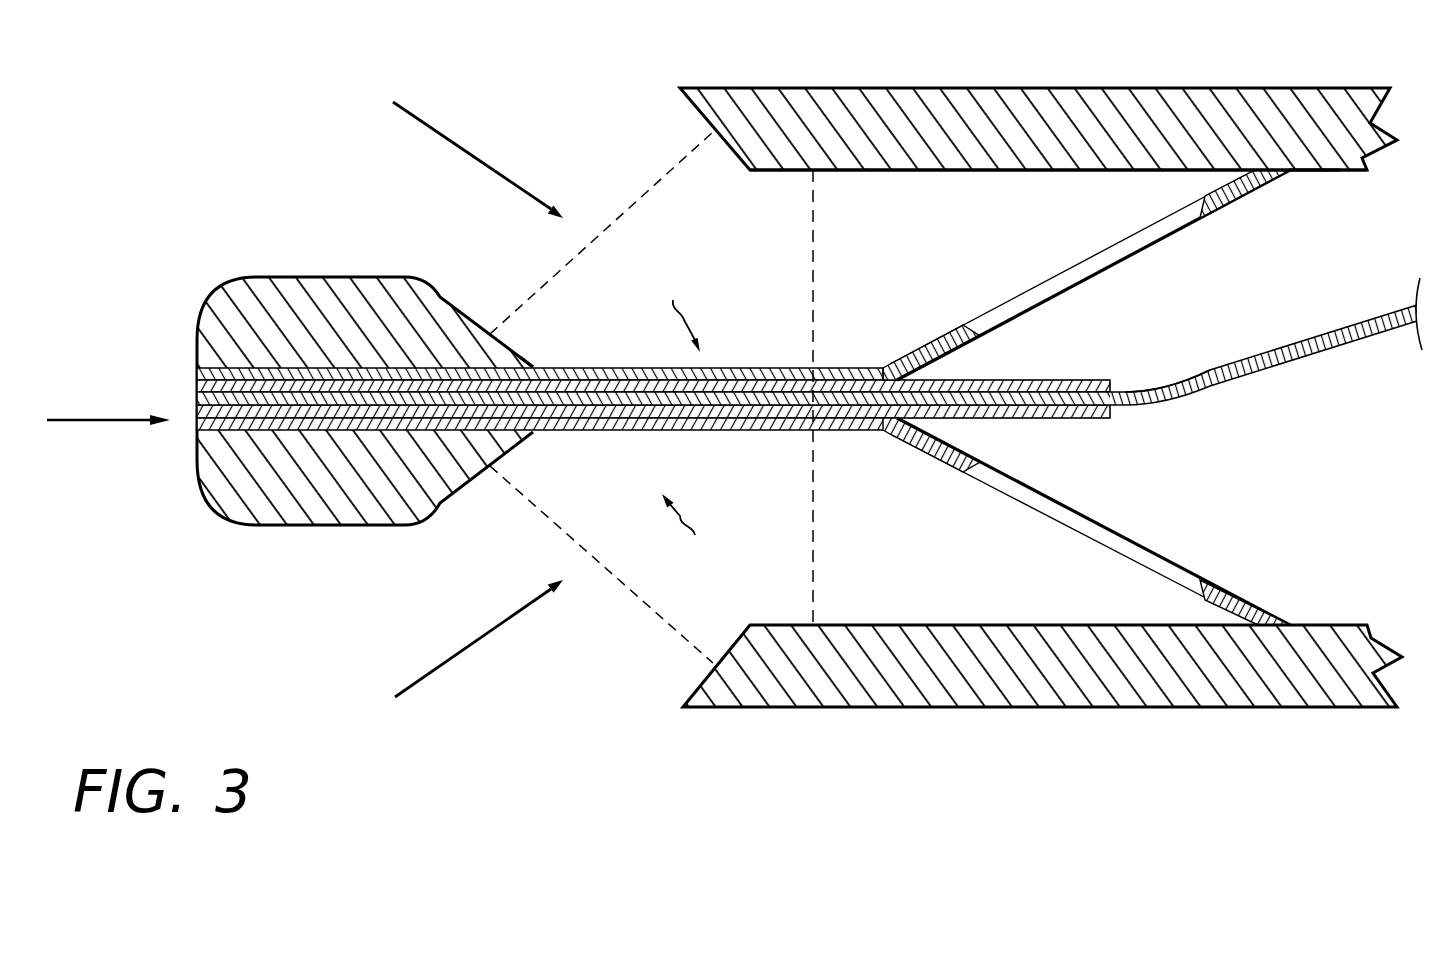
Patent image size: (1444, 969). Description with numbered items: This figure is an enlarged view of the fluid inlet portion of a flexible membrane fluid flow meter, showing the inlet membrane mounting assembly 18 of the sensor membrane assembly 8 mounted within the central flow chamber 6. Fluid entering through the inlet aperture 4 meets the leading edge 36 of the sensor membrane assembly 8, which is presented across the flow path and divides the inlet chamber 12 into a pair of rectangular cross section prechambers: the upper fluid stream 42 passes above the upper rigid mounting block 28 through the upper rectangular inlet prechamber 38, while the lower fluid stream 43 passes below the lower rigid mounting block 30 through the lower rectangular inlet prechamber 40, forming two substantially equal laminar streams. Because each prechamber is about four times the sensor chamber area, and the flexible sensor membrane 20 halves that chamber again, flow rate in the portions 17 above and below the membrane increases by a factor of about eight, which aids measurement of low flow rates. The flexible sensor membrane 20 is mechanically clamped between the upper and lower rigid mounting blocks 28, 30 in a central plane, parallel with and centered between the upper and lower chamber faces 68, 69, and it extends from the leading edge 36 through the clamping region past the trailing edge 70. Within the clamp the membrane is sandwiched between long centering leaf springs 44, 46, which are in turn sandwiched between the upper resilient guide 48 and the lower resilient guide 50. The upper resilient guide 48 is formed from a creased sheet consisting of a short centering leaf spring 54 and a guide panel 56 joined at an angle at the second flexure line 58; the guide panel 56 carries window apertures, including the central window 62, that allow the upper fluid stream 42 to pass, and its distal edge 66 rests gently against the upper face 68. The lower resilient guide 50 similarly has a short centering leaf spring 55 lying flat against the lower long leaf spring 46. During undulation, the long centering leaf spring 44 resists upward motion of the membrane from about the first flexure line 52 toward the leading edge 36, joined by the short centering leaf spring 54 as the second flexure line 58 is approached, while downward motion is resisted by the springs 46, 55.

The inlet aperture 4 is at (99, 419).
The central flow chamber 6 is at (1022, 88).
The sensor membrane assembly 8 is at (685, 532).
The inlet chamber 12 is at (236, 176).
The portions of sensor chamber 17 is at (813, 225).
The inlet membrane mounting assembly 18 is at (680, 312).
The flexible sensor membrane 20 is at (1325, 355).
The upper rigid mounting block 28 is at (426, 284).
The lower rigid mounting block 30 is at (428, 520).
The leading edge 36 is at (197, 345).
The upper rectangular inlet prechamber 38 is at (601, 233).
The lower rectangular inlet prechamber 40 is at (601, 564).
The upper fluid stream 42 is at (472, 156).
The lower fluid stream 43 is at (476, 641).
The long centering leaf spring 44 is at (1062, 378).
The long centering leaf spring 46 is at (1065, 420).
The upper resilient guide 48 is at (922, 348).
The lower resilient guide 50 is at (910, 447).
The first flexure line 52 is at (1133, 388).
The short centering leaf spring 54 is at (787, 366).
The short centering leaf spring 55 is at (787, 433).
The guide panel 56 is at (1252, 193).
The second flexure line 58 is at (890, 372).
The central window 62 is at (1135, 241).
The distal edge 66 is at (1312, 175).
The upper chamber face 68 is at (1000, 170).
The lower chamber face 69 is at (1025, 625).
The trailing edge 70 is at (540, 366).